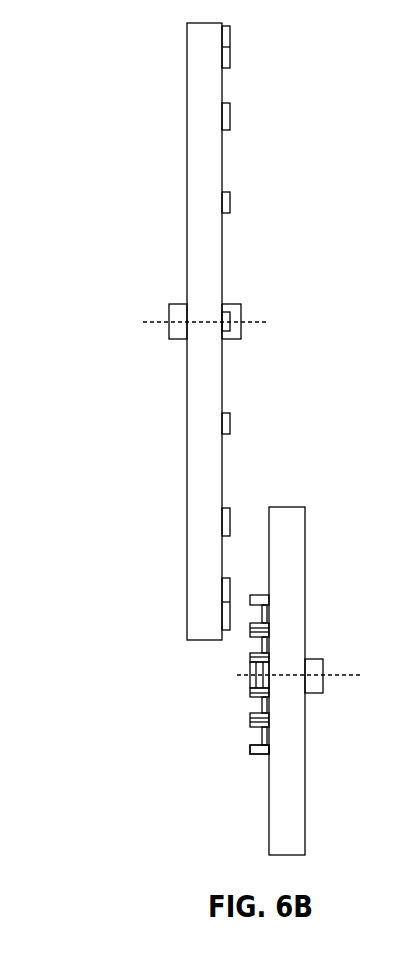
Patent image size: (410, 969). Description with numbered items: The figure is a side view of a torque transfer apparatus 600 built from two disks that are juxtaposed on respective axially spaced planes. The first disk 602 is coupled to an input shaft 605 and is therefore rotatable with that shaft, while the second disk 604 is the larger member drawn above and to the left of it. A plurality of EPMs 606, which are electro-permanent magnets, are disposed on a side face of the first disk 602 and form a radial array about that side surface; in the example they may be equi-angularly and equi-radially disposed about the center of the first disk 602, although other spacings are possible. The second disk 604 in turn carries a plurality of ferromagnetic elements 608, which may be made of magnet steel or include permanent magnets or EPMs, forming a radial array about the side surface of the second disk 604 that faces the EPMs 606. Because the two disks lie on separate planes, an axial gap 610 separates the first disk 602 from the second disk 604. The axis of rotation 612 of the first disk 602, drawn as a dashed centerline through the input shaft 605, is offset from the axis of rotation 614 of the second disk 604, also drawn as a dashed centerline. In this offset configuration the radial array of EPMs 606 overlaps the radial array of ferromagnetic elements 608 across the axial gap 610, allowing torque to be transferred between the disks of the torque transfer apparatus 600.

The torque transfer apparatus 600 is at (128, 98).
The first disk 602 is at (287, 506).
The second disk 604 is at (198, 146).
The input shaft 605 is at (322, 659).
The EPMs 606 is at (262, 755).
The ferromagnetic elements 608 is at (228, 413).
The axial gap 610 is at (233, 638).
The axis of rotation 612 is at (350, 675).
The axis of rotation 614 is at (151, 320).